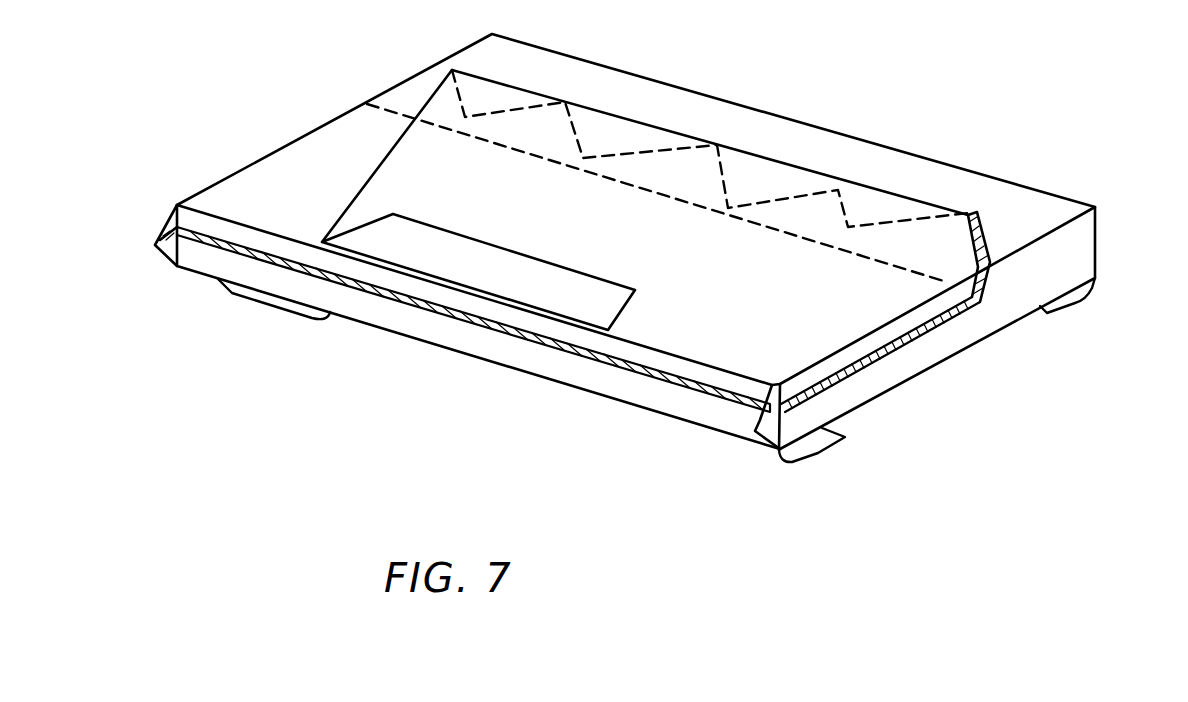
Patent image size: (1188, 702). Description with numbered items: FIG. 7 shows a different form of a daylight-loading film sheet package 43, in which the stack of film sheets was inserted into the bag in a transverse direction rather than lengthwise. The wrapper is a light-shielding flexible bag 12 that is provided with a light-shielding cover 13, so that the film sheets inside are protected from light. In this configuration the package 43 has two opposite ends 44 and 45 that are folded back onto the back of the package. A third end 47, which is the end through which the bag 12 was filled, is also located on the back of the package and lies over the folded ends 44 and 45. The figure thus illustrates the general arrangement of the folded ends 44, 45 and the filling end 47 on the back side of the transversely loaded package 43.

The light-shielding flexible bag 12 is at (1080, 247).
The light-shielding cover 13 is at (703, 348).
The package 43 is at (823, 108).
The end 44 is at (826, 452).
The end 45 is at (1064, 312).
The third end 47 is at (275, 298).